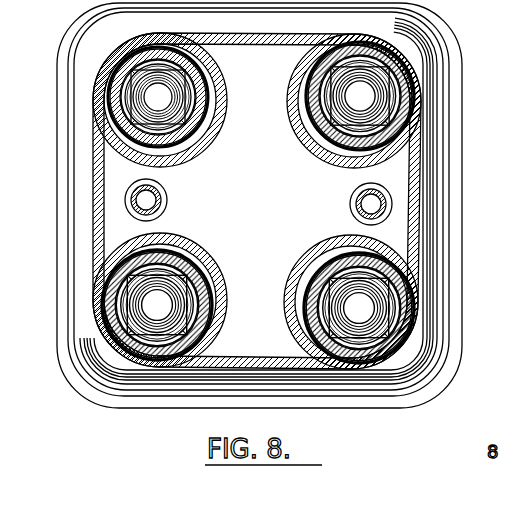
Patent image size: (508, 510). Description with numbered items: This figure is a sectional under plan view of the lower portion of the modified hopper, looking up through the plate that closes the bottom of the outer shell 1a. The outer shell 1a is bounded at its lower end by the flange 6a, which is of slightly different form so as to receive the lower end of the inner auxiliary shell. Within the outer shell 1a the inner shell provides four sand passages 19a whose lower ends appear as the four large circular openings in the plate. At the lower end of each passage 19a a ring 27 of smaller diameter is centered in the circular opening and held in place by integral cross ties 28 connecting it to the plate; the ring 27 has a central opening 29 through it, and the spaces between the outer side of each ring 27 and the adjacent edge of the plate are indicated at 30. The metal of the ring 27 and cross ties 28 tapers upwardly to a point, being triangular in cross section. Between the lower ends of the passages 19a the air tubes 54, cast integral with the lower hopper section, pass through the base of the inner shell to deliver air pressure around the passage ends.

The flange 6a is at (458, 187).
The outer shell 1a is at (414, 236).
The sand passages 19a is at (314, 137).
The cross ties 28 is at (330, 72).
The spaces 30 is at (150, 132).
The ring 27 is at (180, 108).
The opening 29 is at (357, 95).
The tubes 54 is at (167, 196).